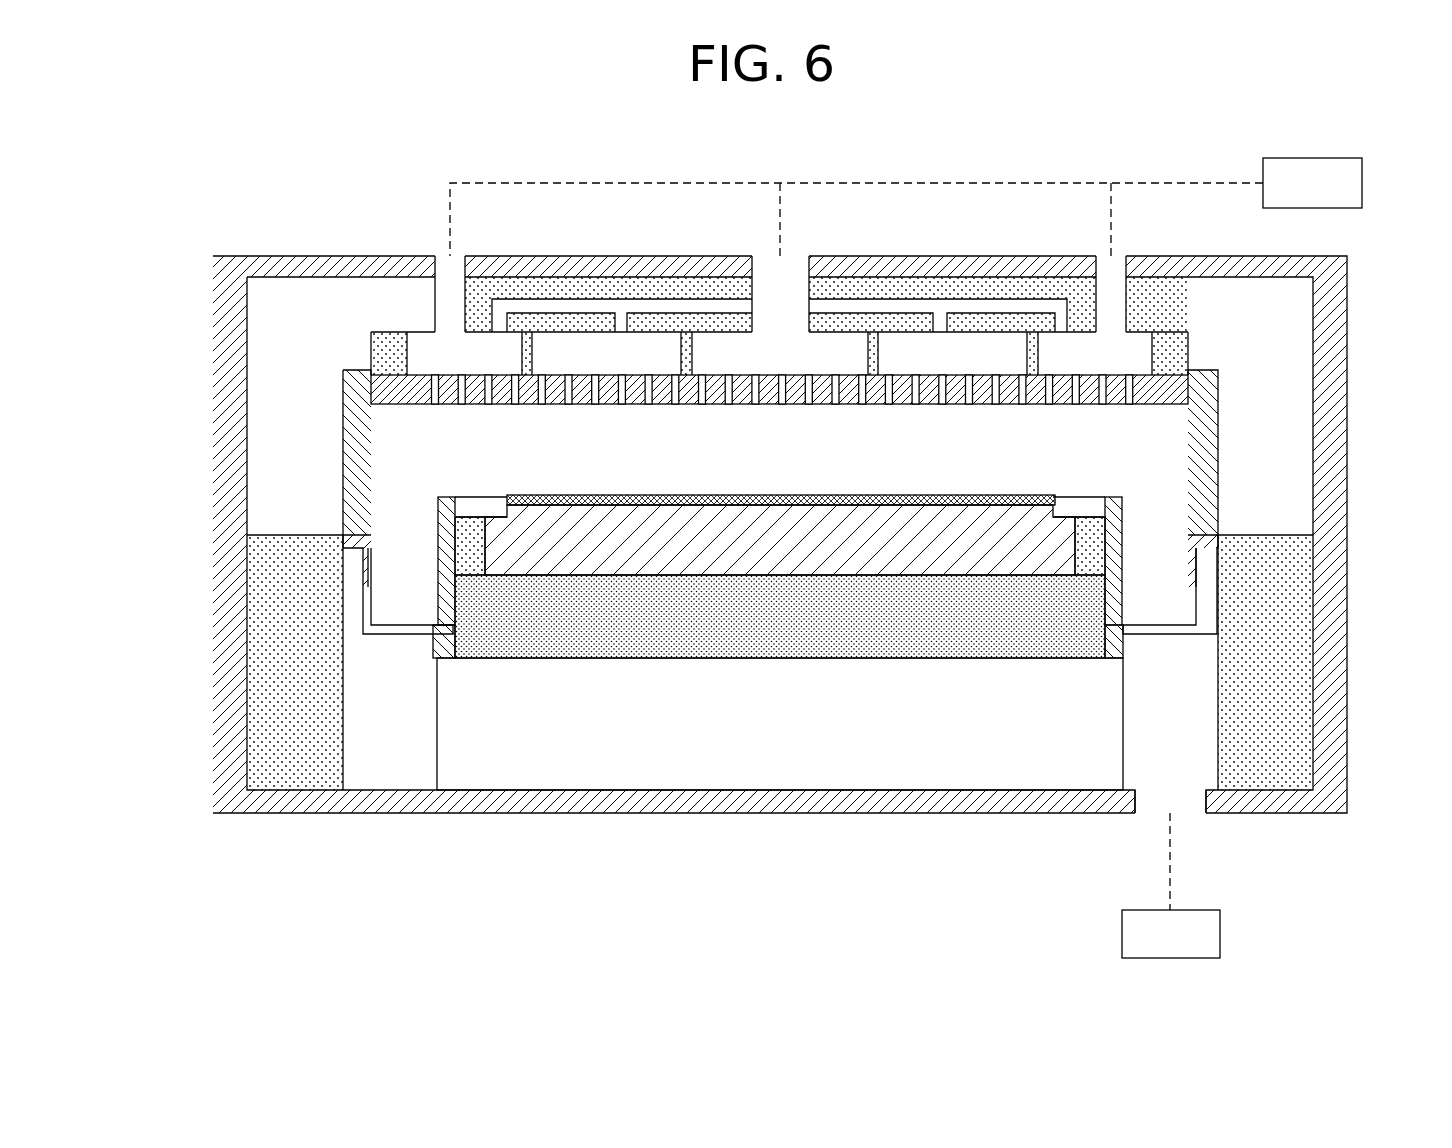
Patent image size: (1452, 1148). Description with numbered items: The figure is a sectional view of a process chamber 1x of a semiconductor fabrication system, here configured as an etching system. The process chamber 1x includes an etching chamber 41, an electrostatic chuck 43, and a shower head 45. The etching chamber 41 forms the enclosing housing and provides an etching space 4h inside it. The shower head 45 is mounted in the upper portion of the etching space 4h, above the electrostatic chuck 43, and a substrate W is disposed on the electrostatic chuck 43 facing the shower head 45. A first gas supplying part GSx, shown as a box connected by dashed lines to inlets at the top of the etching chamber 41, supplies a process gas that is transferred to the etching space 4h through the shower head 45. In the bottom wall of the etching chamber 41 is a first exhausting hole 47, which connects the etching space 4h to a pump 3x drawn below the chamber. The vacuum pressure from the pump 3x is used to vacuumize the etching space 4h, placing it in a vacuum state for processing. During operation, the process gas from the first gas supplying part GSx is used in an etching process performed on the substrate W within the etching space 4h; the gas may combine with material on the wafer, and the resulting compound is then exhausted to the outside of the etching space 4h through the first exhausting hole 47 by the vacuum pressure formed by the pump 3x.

The process chamber 1x is at (1352, 420).
The etching chamber 41 is at (222, 405).
The etching space 4h is at (291, 468).
The shower head 45 is at (401, 396).
The electrostatic chuck 43 is at (644, 515).
The substrate W is at (596, 497).
The first exhausting hole 47 is at (1198, 813).
The first gas supplying part GSx is at (1333, 158).
The pump 3x is at (1122, 935).